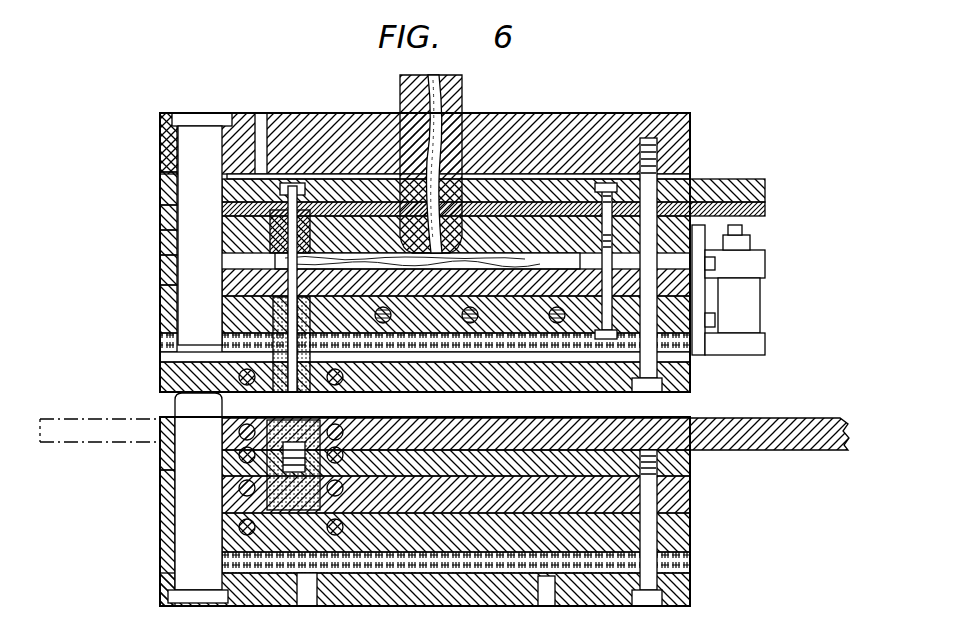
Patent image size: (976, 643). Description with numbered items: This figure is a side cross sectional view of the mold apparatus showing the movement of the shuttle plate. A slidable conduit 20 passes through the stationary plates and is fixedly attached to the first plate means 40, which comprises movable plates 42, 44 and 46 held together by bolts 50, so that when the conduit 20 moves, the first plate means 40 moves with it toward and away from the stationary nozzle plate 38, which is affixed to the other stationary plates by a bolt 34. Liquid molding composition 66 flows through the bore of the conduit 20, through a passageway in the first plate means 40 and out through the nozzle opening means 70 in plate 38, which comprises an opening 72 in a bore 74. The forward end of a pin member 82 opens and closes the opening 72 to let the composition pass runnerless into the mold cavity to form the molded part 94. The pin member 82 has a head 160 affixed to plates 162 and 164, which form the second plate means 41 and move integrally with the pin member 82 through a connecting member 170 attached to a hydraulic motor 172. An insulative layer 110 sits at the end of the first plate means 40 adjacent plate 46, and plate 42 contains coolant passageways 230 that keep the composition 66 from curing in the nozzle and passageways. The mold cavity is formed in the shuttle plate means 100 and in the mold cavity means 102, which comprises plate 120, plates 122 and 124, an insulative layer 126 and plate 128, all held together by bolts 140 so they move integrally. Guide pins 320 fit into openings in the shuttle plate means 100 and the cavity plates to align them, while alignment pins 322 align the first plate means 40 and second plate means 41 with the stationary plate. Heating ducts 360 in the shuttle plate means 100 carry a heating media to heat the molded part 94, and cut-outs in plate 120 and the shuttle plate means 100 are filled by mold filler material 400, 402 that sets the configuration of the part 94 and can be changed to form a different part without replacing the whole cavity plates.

The slidable conduit 20 is at (466, 96).
The bolt 34 is at (663, 140).
The stationary plate 38 is at (525, 394).
The first plate means 40 is at (150, 214).
The second plate means 41 is at (150, 187).
The movable plate 42 is at (165, 236).
The movable plate 44 is at (165, 272).
The movable plate 46 is at (165, 300).
The bolt 50 is at (604, 345).
The liquid molding composition 66 is at (452, 77).
The nozzle opening means 70 is at (305, 397).
The opening 72 is at (262, 396).
The bore 74 is at (270, 332).
The pin member 82 is at (302, 262).
The molded part 94 is at (293, 465).
The shuttle plate means 100 is at (812, 424).
The mold cavity means 102 is at (706, 545).
The insulative layer 110 is at (684, 358).
The plate 120 is at (693, 469).
The plate 122 is at (693, 494).
The plate 124 is at (693, 525).
The insulative layer 126 is at (693, 575).
The plate 128 is at (693, 601).
The bolt 140 is at (646, 600).
The head 160 is at (312, 176).
The plate 162 is at (767, 188).
The plate 164 is at (767, 210).
The connecting member 170 is at (752, 235).
The hydraulic motor 172 is at (764, 302).
The coolant passageways 230 is at (549, 315).
The guide pins 320 is at (198, 552).
The alignment pins 322 is at (190, 147).
The heating ducts 360 is at (352, 425).
The mold filler material 400 is at (299, 394).
The mold filler material 402 is at (222, 451).